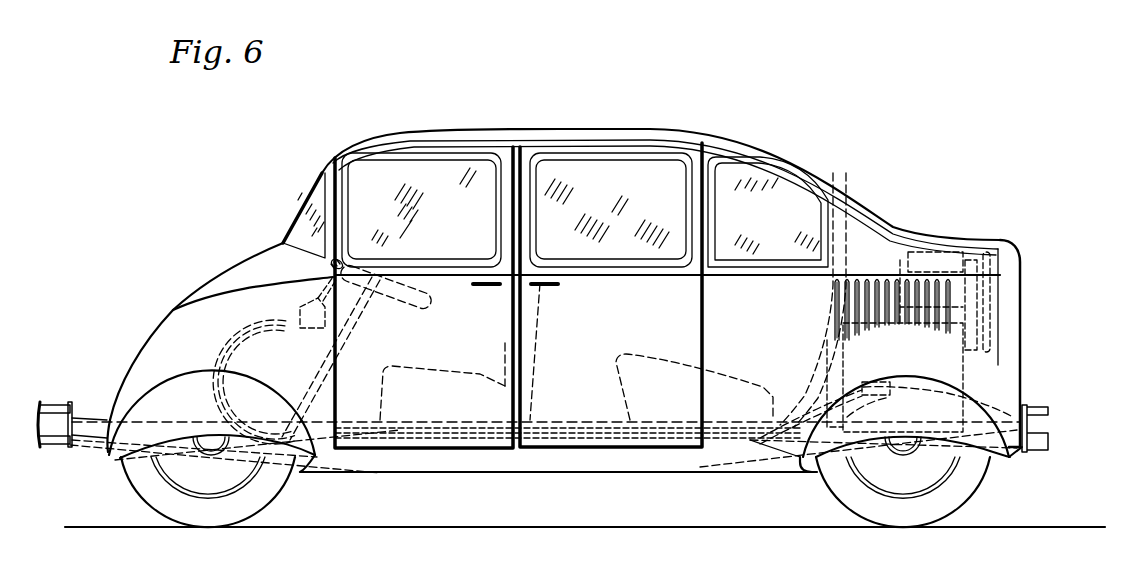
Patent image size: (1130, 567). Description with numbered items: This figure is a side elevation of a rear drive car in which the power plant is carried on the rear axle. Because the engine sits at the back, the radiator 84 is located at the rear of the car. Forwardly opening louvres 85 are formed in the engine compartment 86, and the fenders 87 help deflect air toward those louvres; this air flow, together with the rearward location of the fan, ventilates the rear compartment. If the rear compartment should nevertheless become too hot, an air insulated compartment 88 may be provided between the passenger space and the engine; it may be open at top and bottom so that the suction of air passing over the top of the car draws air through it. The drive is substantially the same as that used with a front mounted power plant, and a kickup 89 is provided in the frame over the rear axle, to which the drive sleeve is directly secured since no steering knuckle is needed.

The radiator 84 is at (1008, 302).
The forwardly opening louvres 85 is at (868, 282).
The engine compartment 86 is at (863, 243).
The fenders 87 is at (836, 397).
The air insulated compartment 88 is at (837, 217).
The kickup 89 is at (945, 392).